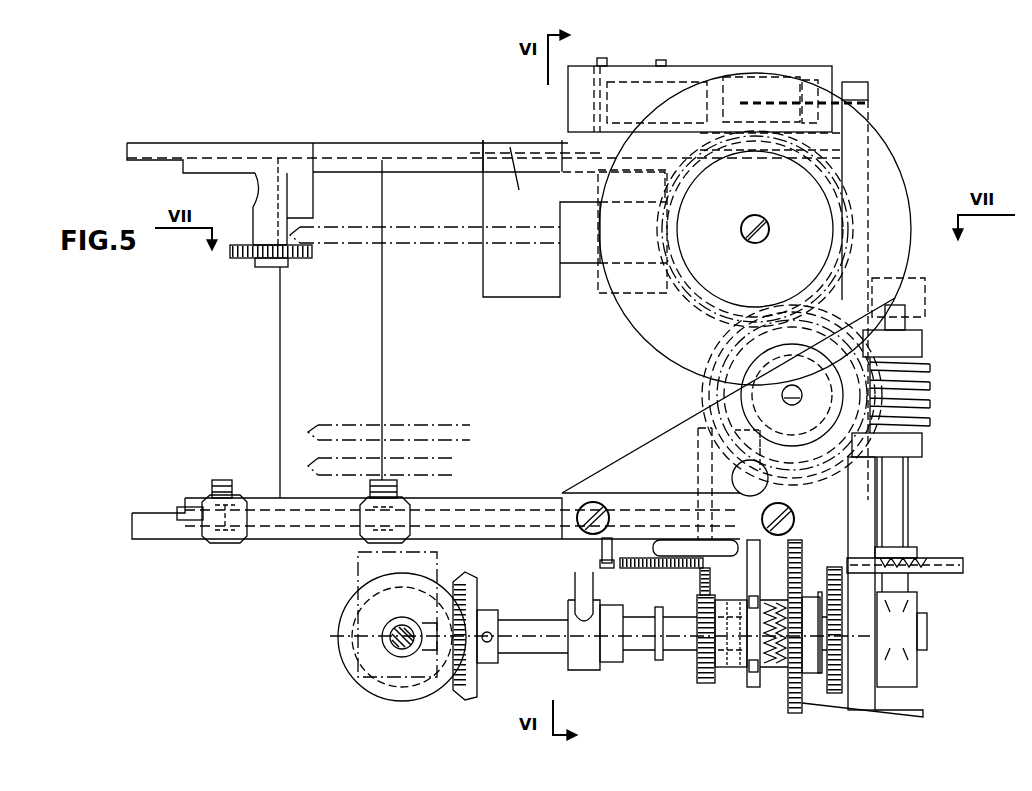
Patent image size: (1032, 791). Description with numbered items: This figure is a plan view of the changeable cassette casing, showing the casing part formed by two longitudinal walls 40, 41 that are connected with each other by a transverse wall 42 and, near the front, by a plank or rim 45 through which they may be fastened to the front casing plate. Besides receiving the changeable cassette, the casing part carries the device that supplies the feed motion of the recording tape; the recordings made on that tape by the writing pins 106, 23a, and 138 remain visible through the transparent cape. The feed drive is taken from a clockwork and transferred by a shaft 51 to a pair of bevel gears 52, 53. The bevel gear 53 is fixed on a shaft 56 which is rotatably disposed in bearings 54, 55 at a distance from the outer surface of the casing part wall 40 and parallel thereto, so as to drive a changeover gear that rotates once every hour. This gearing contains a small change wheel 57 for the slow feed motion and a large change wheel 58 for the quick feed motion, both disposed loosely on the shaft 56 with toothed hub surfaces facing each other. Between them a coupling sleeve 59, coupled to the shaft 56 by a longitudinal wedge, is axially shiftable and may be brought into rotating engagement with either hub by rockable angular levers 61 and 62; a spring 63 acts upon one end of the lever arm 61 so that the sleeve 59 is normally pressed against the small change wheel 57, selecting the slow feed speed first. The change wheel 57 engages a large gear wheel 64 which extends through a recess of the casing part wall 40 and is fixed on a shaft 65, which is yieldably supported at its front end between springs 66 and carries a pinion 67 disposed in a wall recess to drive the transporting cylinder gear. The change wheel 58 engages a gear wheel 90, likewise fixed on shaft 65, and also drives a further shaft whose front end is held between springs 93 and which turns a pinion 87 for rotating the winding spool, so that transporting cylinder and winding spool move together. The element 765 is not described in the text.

The longitudinal wall 41 is at (217, 157).
The writing pin 138 is at (330, 233).
The gear 765 is at (252, 258).
The plank or rim 45 is at (295, 330).
The writing pin 23a is at (303, 431).
The writing pin 106 is at (310, 470).
The pinion 87 is at (221, 480).
The pinion 67 is at (400, 498).
The springs 93 is at (240, 548).
The casing part wall 40 is at (262, 535).
The shaft 65 is at (513, 505).
The springs 66 is at (440, 543).
The angular lever 62 is at (687, 547).
The large gear wheel 64 is at (697, 462).
The spring 63 is at (660, 568).
The gear wheel 90 is at (883, 479).
The transverse wall 42 is at (858, 500).
The bearing 55 is at (895, 662).
The large change wheel 58 is at (897, 713).
The shaft 51 is at (392, 637).
The bearing 54 is at (393, 653).
The bevel gear 52 is at (392, 692).
The bevel gear 53 is at (463, 690).
The shaft 56 is at (540, 638).
The small change wheel 57 is at (705, 677).
The coupling sleeve 59 is at (737, 665).
The angular lever 61 is at (753, 680).